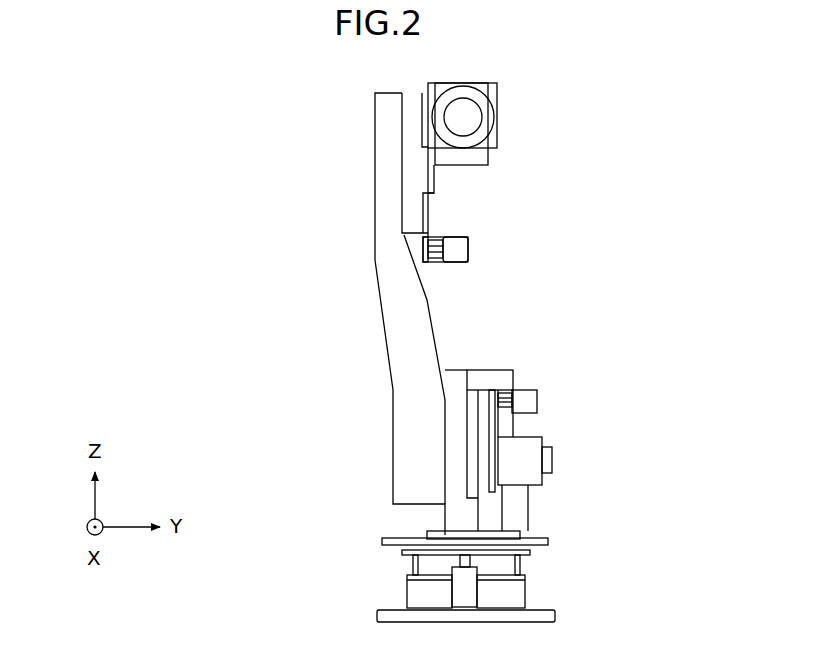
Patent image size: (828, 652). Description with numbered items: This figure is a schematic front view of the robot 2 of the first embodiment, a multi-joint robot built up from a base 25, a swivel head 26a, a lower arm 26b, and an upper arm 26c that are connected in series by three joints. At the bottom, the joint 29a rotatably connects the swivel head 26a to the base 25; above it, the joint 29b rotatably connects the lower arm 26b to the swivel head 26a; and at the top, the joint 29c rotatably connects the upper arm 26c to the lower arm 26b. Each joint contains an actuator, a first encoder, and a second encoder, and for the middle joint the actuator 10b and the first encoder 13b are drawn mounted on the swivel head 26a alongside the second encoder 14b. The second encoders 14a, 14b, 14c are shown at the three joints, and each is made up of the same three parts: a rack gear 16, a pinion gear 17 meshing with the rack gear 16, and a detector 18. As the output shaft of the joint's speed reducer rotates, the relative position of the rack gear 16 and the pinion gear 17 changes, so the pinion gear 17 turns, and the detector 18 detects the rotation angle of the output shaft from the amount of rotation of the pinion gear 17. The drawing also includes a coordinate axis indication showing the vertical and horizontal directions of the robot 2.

The robot 2 is at (297, 186).
The lower arm 26b is at (403, 360).
The upper arm 26c is at (497, 103).
The joint 29c is at (484, 186).
The second encoder 14c is at (534, 203).
The rack gear 16 is at (428, 232).
The pinion gear 17 is at (437, 260).
The detector 18 is at (455, 248).
The joint 29b is at (529, 351).
The second encoder 14b is at (596, 345).
The swivel head 26a is at (457, 520).
The actuator 10b is at (532, 443).
The first encoder 13b is at (550, 463).
The joint 29a is at (555, 560).
The second encoder 14a is at (316, 535).
The base 25 is at (512, 598).